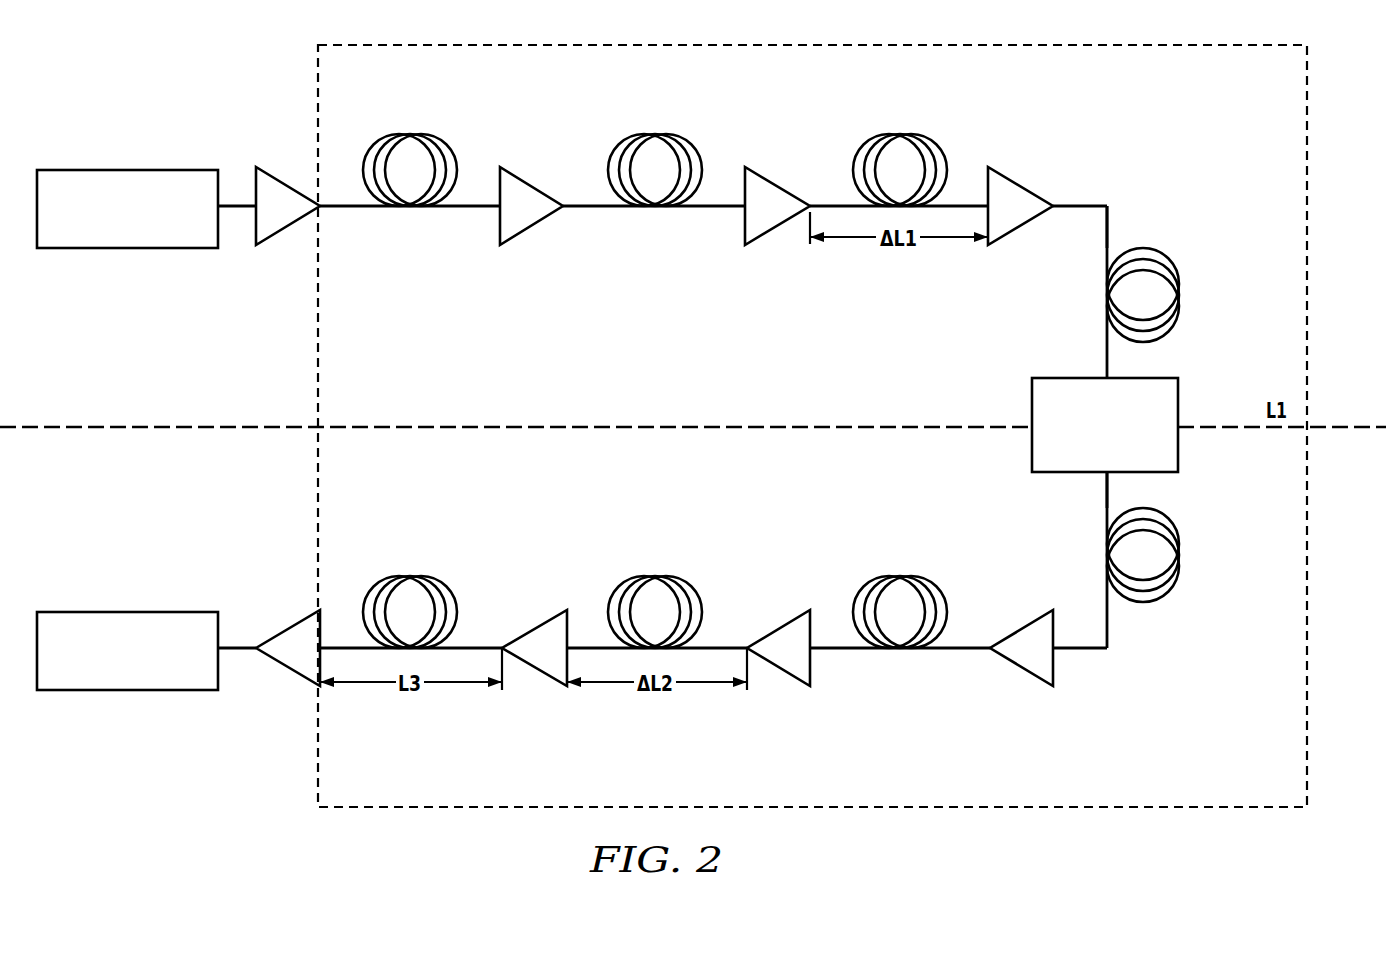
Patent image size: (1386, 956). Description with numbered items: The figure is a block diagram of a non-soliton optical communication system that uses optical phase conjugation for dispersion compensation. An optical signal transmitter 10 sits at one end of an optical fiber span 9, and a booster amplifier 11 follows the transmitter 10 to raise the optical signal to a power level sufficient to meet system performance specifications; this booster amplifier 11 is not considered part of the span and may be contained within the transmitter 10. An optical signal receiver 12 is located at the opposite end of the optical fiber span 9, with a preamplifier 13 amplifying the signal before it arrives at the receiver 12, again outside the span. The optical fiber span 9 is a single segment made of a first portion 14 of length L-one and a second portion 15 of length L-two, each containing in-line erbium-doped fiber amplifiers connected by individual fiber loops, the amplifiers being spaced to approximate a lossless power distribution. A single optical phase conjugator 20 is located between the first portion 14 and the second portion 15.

The optical fiber span 9 is at (814, 45).
The optical signal transmitter 10 is at (130, 170).
The booster amplifier 11 is at (290, 182).
The optical signal receiver 12 is at (130, 612).
The preamplifier 13 is at (292, 626).
The first portion 14 is at (1114, 220).
The second portion 15 is at (1096, 505).
The optical phase conjugator 20 is at (1178, 396).